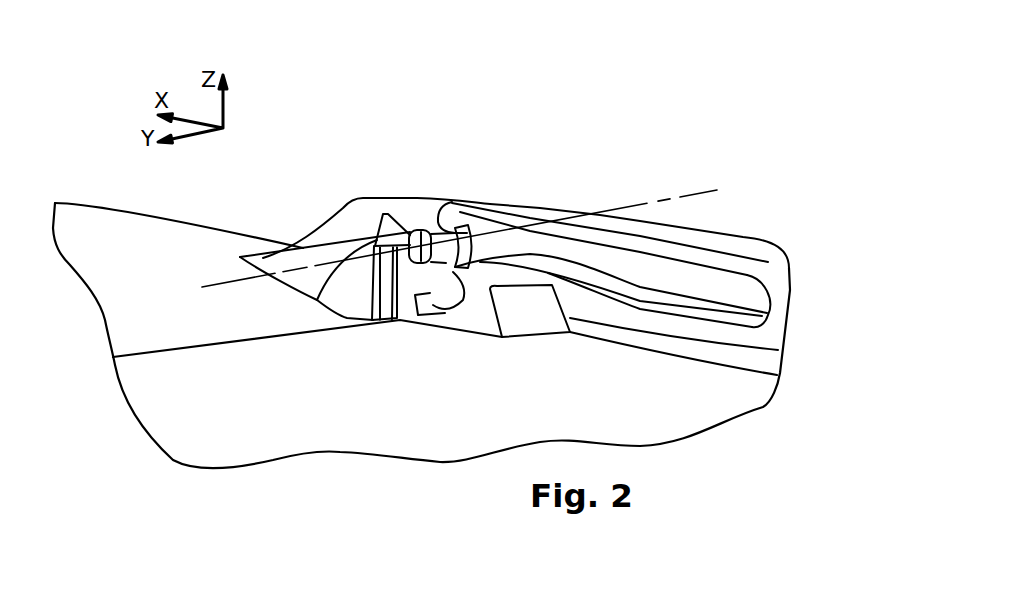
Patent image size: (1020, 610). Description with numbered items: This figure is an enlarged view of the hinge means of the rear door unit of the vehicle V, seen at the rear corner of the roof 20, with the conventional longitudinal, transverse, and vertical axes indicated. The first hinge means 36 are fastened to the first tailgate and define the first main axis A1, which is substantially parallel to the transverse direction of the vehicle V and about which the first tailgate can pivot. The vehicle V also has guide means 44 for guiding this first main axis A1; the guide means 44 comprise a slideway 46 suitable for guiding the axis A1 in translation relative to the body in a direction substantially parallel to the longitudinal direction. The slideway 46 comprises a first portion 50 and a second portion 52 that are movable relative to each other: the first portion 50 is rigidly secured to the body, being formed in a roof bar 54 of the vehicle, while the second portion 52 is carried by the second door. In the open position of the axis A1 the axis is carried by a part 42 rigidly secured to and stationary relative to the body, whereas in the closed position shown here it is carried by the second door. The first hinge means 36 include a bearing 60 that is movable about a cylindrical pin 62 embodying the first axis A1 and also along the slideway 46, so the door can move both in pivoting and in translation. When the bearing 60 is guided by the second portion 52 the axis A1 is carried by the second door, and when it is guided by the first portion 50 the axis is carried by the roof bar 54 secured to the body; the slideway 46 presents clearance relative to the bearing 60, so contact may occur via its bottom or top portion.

The roof 20 is at (167, 400).
The first hinge means 36 is at (383, 176).
The part 42 is at (585, 203).
The guide means 44 is at (636, 190).
The slideway 46 is at (692, 282).
The first portion 50 is at (643, 268).
The second portion 52 is at (462, 246).
The roof bar 54 is at (747, 235).
The bearing 60 is at (457, 247).
The cylindrical pin 62 is at (383, 231).
The first main axis A1 is at (700, 194).
The vehicle V is at (117, 450).